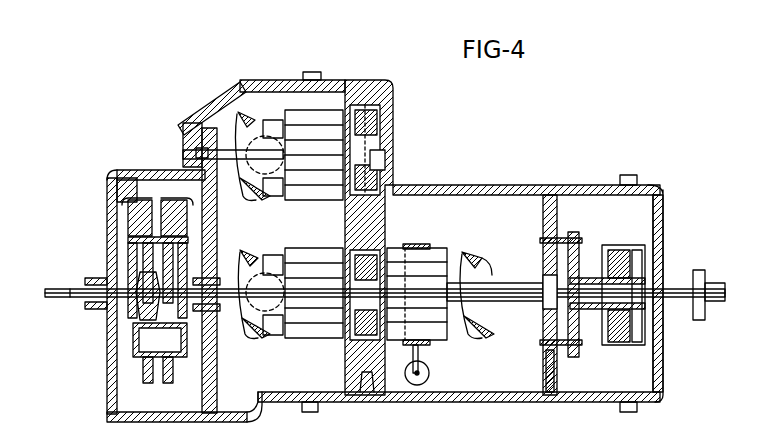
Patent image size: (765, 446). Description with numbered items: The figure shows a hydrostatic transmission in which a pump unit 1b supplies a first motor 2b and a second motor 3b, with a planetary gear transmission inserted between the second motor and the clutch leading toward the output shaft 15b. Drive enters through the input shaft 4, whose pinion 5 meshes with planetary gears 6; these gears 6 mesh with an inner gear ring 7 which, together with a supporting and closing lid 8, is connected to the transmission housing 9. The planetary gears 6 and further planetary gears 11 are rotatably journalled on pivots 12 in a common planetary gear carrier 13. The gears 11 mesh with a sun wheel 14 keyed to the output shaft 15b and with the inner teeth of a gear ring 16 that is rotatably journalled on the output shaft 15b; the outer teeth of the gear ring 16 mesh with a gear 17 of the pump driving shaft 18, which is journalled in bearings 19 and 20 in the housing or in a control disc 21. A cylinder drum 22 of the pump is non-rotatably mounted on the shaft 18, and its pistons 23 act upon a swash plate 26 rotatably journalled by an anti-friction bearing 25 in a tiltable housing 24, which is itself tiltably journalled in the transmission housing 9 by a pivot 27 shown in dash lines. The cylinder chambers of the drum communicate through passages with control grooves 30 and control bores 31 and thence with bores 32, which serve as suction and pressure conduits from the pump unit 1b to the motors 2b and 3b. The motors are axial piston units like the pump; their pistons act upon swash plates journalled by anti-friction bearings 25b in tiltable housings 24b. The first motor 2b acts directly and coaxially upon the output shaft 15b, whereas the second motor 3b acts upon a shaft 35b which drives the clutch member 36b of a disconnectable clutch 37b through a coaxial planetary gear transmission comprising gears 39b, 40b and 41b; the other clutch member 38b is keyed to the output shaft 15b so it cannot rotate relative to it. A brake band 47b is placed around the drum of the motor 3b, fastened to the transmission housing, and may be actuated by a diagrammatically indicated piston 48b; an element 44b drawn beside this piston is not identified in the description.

The pump unit 1b is at (325, 103).
The first motor 2b is at (330, 342).
The second motor 3b is at (420, 283).
The input shaft 4 is at (60, 286).
The pinion 5 is at (140, 316).
The planetary gears 6 is at (140, 225).
The inner gear ring 7 is at (150, 384).
The supporting and closing lid 8 is at (108, 372).
The transmission housing 9 is at (148, 170).
The planetary gears 11 is at (180, 220).
The pivots 12 is at (128, 240).
The planetary gear carrier 13 is at (133, 343).
The sun wheel 14 is at (172, 270).
The output shaft 15b is at (232, 300).
The gear ring 16 is at (170, 384).
The gear 17 is at (202, 132).
The pump driving shaft 18 is at (230, 160).
The bearing 19 is at (196, 152).
The bearing 20 is at (388, 140).
The control disc 21 is at (376, 394).
The cylinder drum 22 is at (296, 108).
The pistons 23 is at (272, 118).
The tiltable housing 24 is at (240, 118).
The tiltable housing 24b is at (488, 262).
The anti-friction bearing 25 is at (222, 113).
The anti-friction bearing 25b is at (496, 266).
The swash plate 26 is at (248, 112).
The pivot 27 is at (285, 150).
The control grooves 30 is at (372, 84).
The control bores 31 is at (378, 118).
The bores 32 is at (392, 160).
The shaft 35b is at (539, 294).
The clutch member 36b is at (632, 318).
The disconnectable clutch 37b is at (645, 248).
The clutch member 38b is at (628, 265).
The gear 39b is at (495, 282).
The gear 40b is at (546, 370).
The gear 41b is at (547, 394).
The weight rod 44b is at (420, 355).
The brake band 47b is at (411, 286).
The piston 48b is at (414, 386).